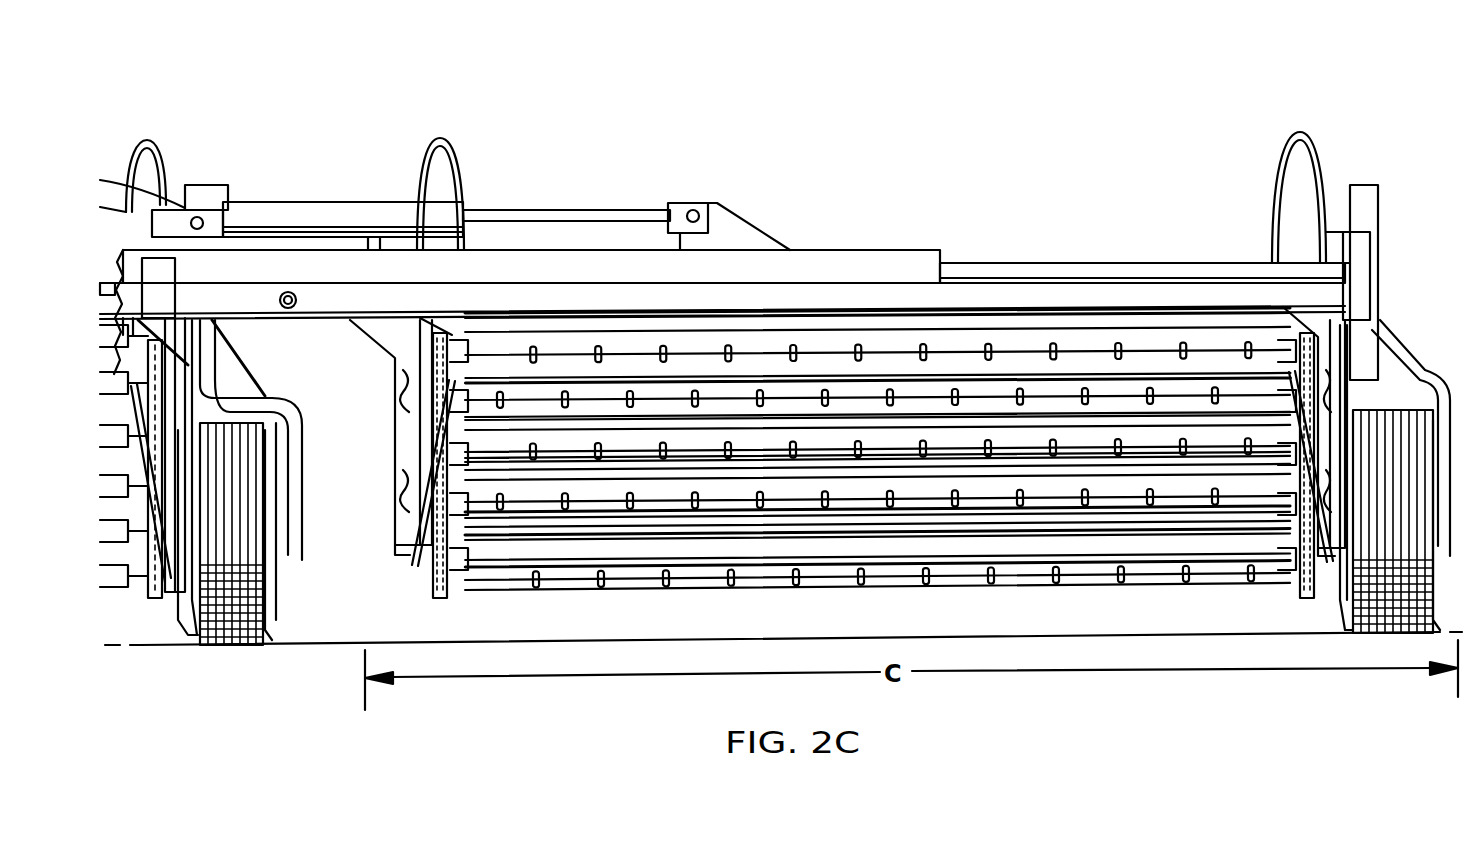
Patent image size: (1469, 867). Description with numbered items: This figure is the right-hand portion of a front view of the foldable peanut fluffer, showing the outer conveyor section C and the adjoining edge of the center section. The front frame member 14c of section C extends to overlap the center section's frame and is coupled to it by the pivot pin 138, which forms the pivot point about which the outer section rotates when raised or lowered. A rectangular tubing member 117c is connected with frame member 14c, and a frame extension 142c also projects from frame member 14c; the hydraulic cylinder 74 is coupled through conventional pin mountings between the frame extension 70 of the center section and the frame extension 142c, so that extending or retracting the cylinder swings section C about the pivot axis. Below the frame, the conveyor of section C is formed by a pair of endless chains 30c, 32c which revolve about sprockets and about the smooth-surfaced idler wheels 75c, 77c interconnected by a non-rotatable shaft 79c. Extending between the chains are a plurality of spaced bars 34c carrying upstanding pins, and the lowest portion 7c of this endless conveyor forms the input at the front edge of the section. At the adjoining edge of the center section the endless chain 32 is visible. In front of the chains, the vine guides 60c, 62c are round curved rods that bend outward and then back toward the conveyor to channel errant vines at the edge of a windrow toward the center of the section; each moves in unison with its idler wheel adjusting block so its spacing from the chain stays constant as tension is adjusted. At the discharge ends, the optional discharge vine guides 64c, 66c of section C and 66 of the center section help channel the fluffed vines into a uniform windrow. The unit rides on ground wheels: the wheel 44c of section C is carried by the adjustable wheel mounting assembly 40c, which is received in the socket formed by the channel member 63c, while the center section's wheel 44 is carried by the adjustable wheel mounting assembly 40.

The lowest portion of the endless conveyor 7c is at (764, 585).
The front frame member 14c is at (1113, 282).
The endless chain 30c is at (436, 592).
The endless chain 32 is at (165, 600).
The endless chain 32c is at (1298, 588).
The spaced bar 34c is at (1035, 583).
The adjustable wheel mounting assembly 40 is at (302, 462).
The adjustable wheel mounting assembly 40c is at (1416, 356).
The wheel 44 is at (265, 600).
The wheel 44c is at (1370, 635).
The vine guide 60c is at (430, 452).
The vine guide 62c is at (1290, 420).
The channel member 63c is at (1362, 250).
The discharge vine guide 64c is at (436, 140).
The discharge vine guide 66 is at (141, 147).
The discharge vine guide 66c is at (1301, 133).
The frame extension 70 is at (128, 237).
The hydraulic cylinder 74 is at (325, 205).
The idler wheel 75c is at (433, 560).
The idler wheel 77c is at (1295, 540).
The non-rotatable shaft 79c is at (580, 538).
The rectangular tubing member 117c is at (866, 250).
The pivot pin 138 is at (289, 310).
The frame extension 142c is at (735, 228).